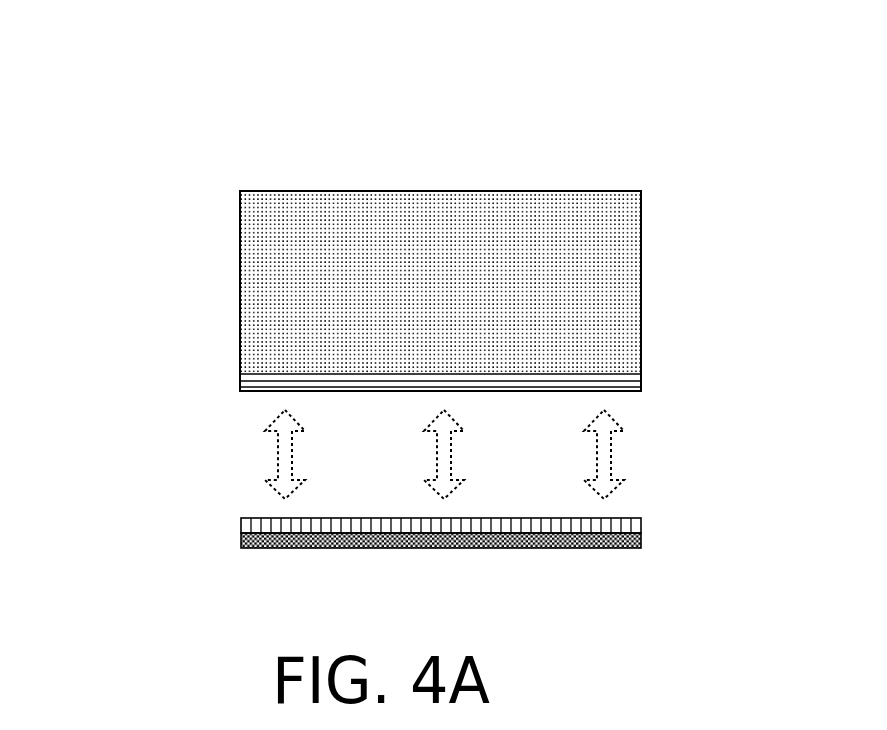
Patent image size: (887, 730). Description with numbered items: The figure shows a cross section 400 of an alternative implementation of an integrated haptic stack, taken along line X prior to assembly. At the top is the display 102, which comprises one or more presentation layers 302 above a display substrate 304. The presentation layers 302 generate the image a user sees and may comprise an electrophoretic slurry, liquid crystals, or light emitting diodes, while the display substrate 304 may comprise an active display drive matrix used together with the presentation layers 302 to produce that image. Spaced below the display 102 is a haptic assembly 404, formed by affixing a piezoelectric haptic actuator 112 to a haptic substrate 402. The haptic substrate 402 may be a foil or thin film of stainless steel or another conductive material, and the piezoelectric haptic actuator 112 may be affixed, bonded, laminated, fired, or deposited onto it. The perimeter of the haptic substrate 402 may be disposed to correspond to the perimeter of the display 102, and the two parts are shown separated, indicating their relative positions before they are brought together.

The cross section 400 is at (498, 104).
The display 102 is at (228, 191).
The presentation layers 302 is at (342, 222).
The display substrate 304 is at (278, 383).
The haptic assembly 404 is at (228, 555).
The piezoelectric haptic actuator 112 is at (628, 528).
The haptic substrate 402 is at (562, 543).